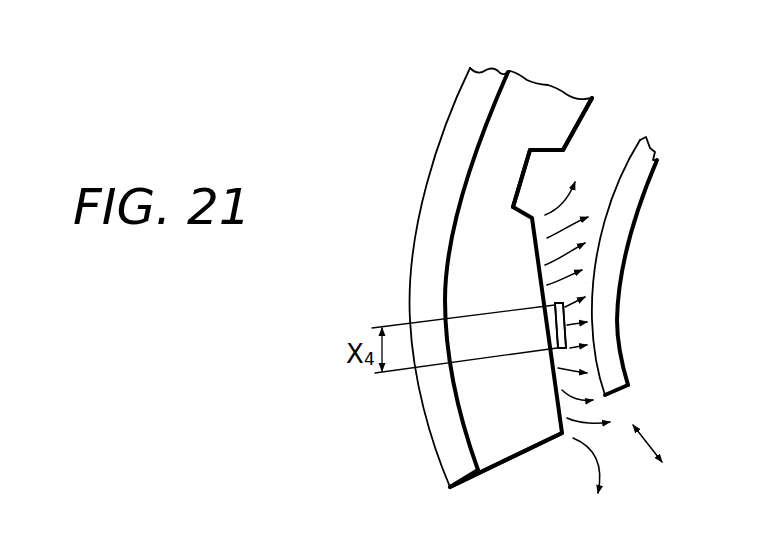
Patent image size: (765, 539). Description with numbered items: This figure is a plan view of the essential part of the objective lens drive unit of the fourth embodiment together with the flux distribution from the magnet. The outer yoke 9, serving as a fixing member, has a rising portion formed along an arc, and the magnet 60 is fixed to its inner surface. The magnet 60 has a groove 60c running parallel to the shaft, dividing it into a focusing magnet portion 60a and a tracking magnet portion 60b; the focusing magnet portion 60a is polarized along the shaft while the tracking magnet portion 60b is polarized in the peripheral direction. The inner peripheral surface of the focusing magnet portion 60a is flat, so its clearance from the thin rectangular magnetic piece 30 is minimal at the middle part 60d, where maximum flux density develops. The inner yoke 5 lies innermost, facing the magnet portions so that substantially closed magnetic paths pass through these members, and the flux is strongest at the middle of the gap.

The outer yoke 9 is at (457, 125).
The magnet 60 is at (468, 205).
The focusing magnet portion 60a is at (522, 430).
The tracking magnet portion 60b is at (567, 108).
The groove 60c is at (528, 167).
The middle part 60d is at (555, 318).
The magnetic piece 30 is at (565, 322).
The inner yoke 5 is at (618, 198).